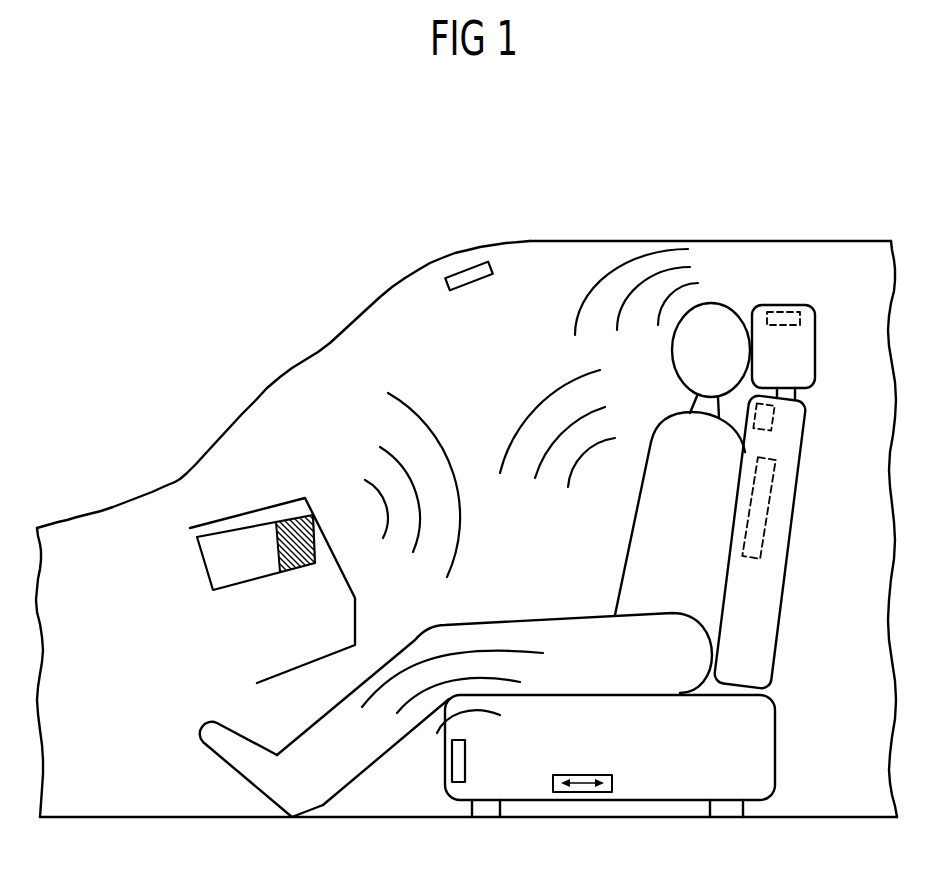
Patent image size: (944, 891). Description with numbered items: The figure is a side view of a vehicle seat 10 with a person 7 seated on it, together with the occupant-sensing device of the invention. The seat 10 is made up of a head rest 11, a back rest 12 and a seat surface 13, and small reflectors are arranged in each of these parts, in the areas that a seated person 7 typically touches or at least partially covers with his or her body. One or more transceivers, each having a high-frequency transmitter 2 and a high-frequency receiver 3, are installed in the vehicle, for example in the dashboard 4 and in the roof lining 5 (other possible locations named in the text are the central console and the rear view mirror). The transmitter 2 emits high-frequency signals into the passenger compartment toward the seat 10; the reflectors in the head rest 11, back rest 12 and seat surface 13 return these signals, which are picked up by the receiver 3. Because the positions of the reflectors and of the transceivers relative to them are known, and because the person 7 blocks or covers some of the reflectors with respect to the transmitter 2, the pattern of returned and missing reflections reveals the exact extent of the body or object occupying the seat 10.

The high-frequency transmitter 2 is at (299, 556).
The high-frequency receiver 3 is at (468, 280).
The dashboard 4 is at (313, 503).
The roof lining 5 is at (523, 243).
The person 7 is at (623, 562).
The seat 10 is at (660, 538).
The head rest 11 is at (792, 343).
The back rest 12 is at (763, 628).
The seat surface 13 is at (755, 752).